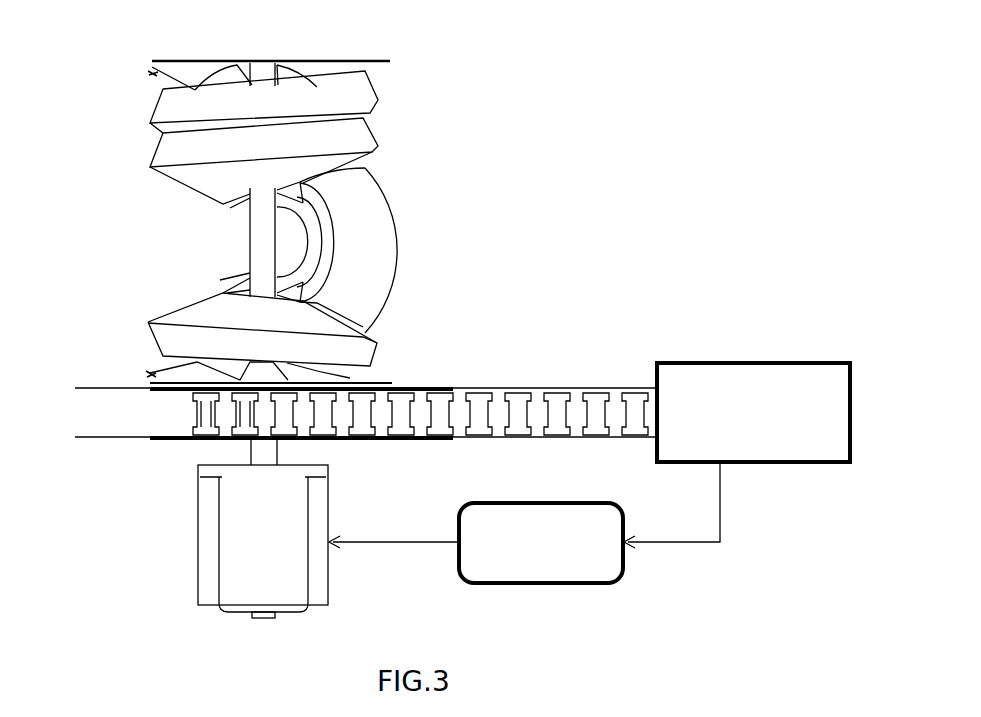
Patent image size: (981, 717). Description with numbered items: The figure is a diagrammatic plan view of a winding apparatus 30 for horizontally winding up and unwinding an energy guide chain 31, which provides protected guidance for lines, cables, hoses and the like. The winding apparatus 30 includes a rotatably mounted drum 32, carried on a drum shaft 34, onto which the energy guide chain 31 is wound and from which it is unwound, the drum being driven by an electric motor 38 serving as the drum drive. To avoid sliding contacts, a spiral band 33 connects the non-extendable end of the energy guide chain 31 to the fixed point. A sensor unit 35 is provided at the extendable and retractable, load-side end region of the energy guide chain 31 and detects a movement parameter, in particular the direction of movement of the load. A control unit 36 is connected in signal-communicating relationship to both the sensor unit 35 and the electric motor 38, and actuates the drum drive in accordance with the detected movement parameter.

The winding apparatus 30 is at (118, 106).
The energy guide chain 31 is at (515, 388).
The drum 32 is at (405, 386).
The spiral band 33 is at (380, 240).
The drum shaft 34 is at (257, 230).
The sensor unit 35 is at (695, 377).
The control unit 36 is at (561, 573).
The electric motor 38 is at (241, 591).